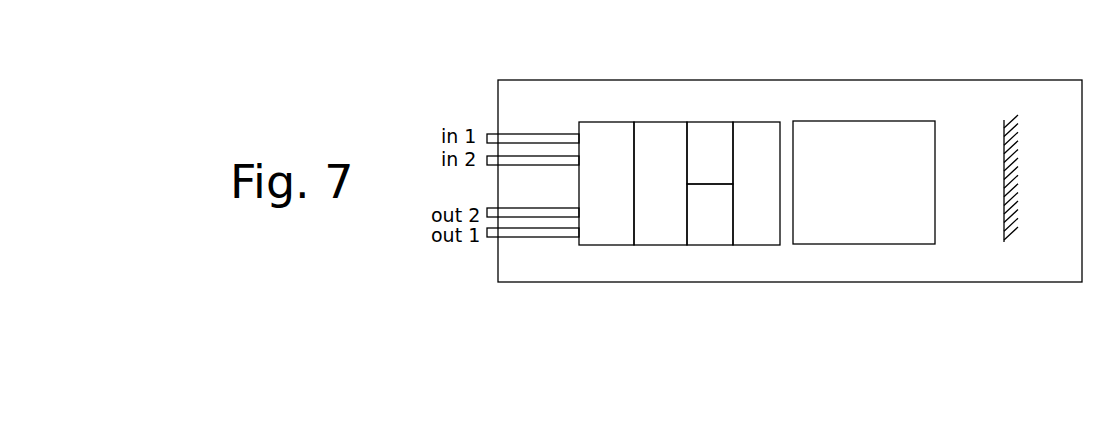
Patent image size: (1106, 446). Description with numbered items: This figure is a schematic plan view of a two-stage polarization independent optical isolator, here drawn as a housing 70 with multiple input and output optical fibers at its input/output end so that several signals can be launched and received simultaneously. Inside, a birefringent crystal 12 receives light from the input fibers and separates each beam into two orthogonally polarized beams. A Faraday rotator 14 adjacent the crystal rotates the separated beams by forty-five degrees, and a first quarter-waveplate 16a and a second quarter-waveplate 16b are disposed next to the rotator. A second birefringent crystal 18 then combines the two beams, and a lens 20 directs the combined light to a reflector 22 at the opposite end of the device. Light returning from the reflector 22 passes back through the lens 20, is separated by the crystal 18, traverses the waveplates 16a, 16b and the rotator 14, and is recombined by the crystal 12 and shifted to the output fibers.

The housing 70 is at (757, 80).
The birefringent crystal 12 is at (592, 122).
The Faraday rotator 14 is at (650, 122).
The first quarter-waveplate 16a is at (723, 245).
The second quarter-waveplate 16b is at (708, 122).
The second birefringent crystal 18 is at (763, 245).
The lens 20 is at (853, 245).
The reflector 22 is at (1004, 242).